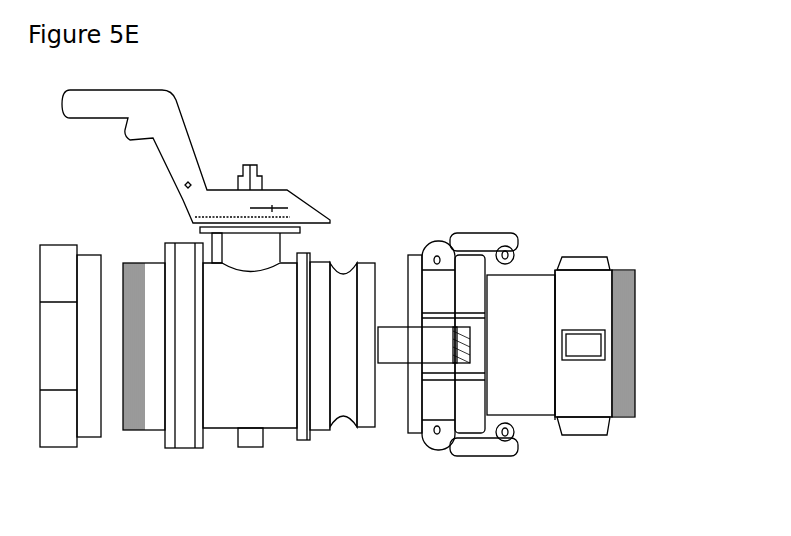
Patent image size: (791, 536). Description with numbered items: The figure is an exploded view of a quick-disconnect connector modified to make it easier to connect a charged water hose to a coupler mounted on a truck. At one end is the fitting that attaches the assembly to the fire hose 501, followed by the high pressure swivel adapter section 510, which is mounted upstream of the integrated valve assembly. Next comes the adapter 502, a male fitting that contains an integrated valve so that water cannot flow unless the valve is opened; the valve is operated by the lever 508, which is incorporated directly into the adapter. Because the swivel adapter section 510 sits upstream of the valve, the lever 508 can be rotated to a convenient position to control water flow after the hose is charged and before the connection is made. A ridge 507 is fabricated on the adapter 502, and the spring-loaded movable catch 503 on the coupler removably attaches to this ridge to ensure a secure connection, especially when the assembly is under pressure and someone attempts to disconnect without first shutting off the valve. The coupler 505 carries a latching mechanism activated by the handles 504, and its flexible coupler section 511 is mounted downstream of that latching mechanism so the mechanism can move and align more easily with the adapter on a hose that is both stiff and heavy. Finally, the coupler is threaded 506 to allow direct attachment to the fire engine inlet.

The fire hose 501 is at (90, 248).
The adapter 502 is at (244, 372).
The movable catch 503 is at (387, 355).
The handles 504 is at (476, 454).
The coupler 505 is at (580, 305).
The thread 506 is at (624, 415).
The ridge 507 is at (297, 324).
The lever 508 is at (289, 196).
The high pressure swivel adapter section 510 is at (183, 432).
The flexible coupler section 511 is at (530, 291).